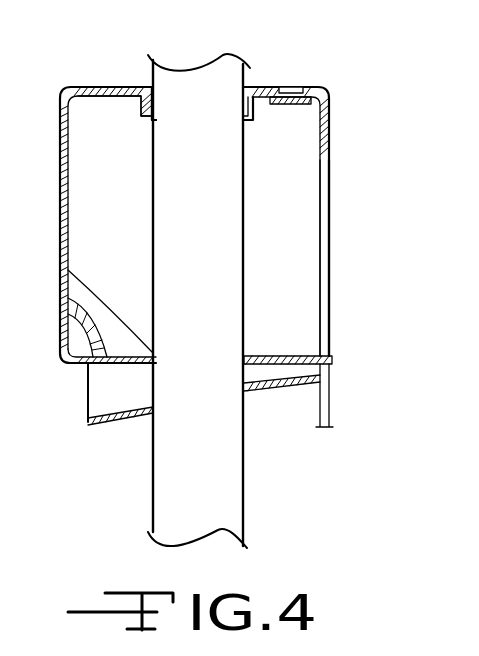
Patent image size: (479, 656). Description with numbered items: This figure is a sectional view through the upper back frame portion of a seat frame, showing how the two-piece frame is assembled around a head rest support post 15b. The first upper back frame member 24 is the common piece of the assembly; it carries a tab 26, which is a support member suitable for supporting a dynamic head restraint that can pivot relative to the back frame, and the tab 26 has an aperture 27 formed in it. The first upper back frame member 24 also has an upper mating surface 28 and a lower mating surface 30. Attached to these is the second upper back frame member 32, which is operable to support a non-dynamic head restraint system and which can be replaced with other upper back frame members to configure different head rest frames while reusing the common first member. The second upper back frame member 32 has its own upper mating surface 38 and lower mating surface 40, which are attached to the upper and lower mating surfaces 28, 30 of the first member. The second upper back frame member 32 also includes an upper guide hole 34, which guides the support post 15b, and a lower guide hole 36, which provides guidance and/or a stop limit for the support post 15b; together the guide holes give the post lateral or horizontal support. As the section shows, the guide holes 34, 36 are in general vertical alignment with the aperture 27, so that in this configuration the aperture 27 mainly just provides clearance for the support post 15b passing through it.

The support post 15b is at (205, 243).
The first upper back frame member 24 is at (330, 407).
The tab 26 is at (88, 422).
The aperture 27 is at (148, 407).
The upper mating surface 28 is at (310, 92).
The lower mating surface 30 is at (334, 362).
The second upper back frame member 32 is at (295, 87).
The upper guide hole 34 is at (148, 88).
The lower guide hole 36 is at (150, 358).
The upper mating surface 38 is at (282, 86).
The lower mating surface 40 is at (313, 355).